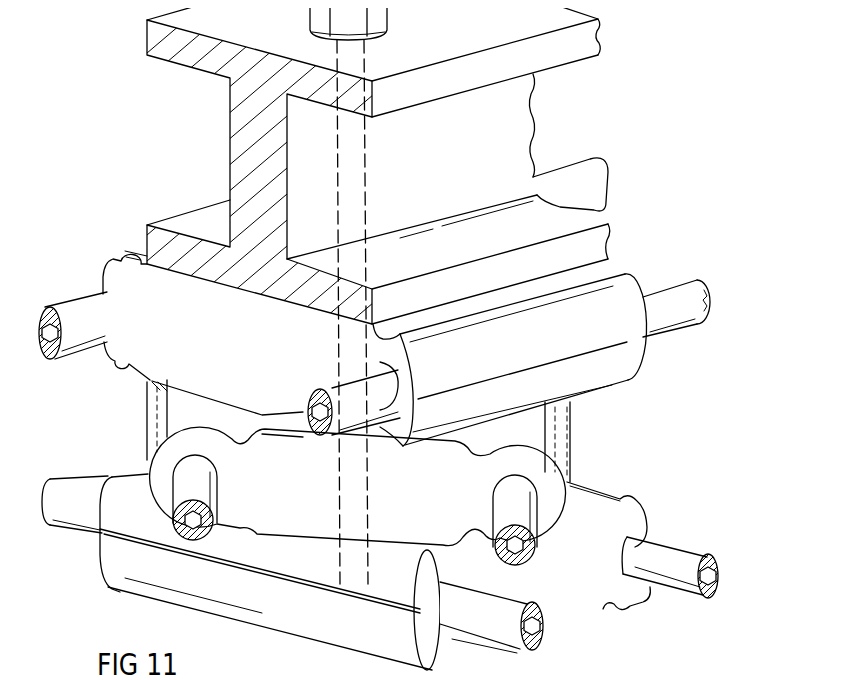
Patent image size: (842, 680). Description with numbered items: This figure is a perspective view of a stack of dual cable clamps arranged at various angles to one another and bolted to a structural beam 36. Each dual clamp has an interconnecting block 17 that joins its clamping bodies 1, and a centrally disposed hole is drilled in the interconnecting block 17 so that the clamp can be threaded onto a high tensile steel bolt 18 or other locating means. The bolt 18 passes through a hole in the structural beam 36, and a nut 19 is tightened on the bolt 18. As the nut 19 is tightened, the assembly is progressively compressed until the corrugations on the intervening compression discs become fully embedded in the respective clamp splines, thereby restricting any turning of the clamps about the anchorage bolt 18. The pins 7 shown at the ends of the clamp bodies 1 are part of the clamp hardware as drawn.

The clamping jaw / rail body 1 is at (135, 247).
The pin 7 is at (90, 310).
The interconnecting block 17 is at (160, 458).
The bolt 18 is at (355, 161).
The nut 19 is at (376, 16).
The structural beam 36 is at (513, 125).